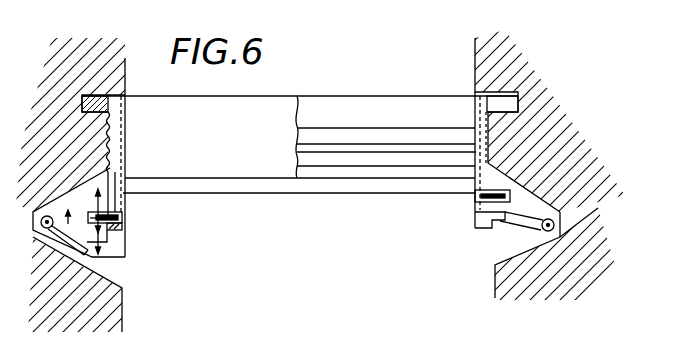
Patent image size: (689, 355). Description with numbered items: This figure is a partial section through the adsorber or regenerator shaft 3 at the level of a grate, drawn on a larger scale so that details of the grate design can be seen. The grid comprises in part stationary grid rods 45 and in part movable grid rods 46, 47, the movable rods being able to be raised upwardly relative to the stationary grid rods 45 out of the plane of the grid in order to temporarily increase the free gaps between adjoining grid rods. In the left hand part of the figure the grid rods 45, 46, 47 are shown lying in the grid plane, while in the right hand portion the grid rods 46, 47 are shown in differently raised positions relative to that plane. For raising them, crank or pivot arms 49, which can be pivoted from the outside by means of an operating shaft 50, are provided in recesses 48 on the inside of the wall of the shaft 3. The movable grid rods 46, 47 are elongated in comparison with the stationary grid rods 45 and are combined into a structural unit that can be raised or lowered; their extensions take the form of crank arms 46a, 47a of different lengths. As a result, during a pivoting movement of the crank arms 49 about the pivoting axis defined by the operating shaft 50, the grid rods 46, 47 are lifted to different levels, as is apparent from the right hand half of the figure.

The shaft 3 is at (533, 177).
The stationary grid rods 45 is at (393, 188).
The movable grid rod 46 is at (347, 162).
The movable grid rod 47 is at (325, 131).
The crank arm 46a is at (124, 216).
The crank arm 47a is at (126, 256).
The recess 48 is at (517, 252).
The crank or pivot arm 49 is at (537, 222).
The operating shaft 50 is at (563, 214).